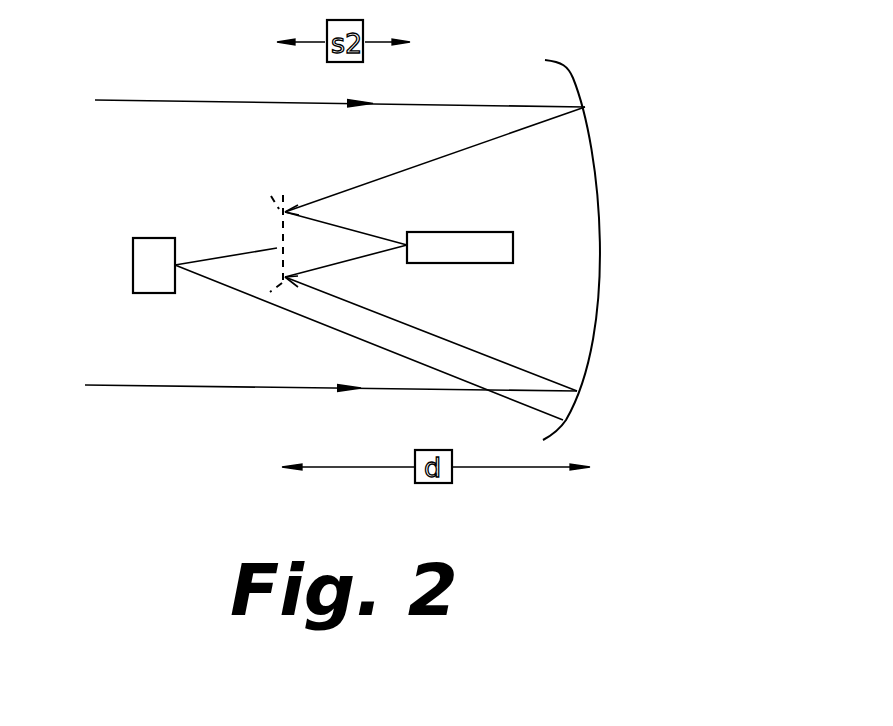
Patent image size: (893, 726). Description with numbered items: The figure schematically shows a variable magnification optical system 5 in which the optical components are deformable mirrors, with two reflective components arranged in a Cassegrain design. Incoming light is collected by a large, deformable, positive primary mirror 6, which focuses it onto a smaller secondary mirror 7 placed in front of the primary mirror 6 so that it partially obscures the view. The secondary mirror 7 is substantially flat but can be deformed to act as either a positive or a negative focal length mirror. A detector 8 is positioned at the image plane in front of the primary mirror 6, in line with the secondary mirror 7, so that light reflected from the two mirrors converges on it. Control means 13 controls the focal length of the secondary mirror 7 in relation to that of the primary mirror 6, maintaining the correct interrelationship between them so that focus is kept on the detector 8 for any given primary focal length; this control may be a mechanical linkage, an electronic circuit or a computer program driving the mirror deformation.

The system 5 is at (253, 84).
The primary mirror 6 is at (545, 60).
The secondary mirror 7 is at (280, 193).
The detector 8 is at (470, 230).
The control means 13 is at (152, 238).